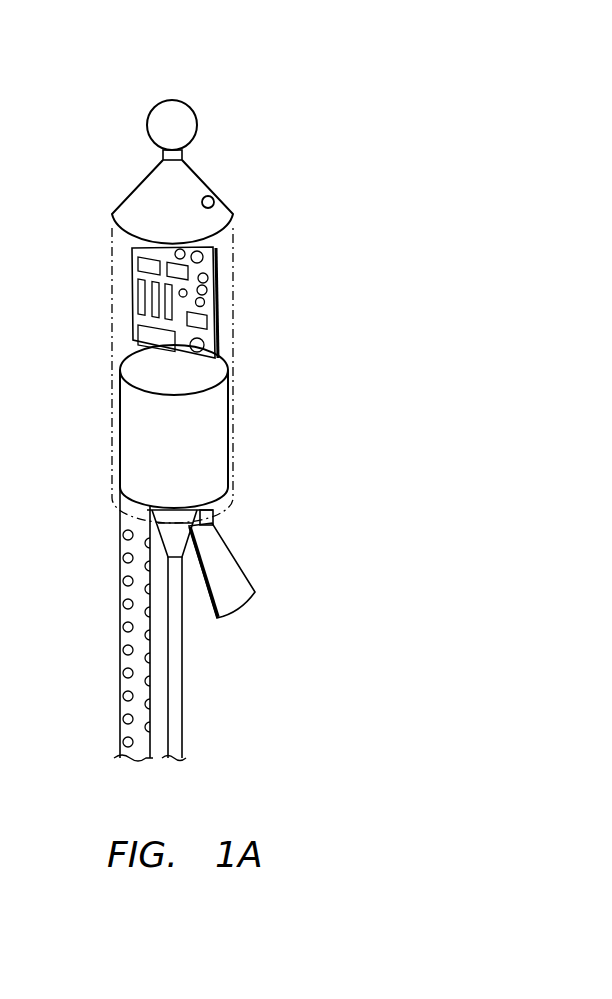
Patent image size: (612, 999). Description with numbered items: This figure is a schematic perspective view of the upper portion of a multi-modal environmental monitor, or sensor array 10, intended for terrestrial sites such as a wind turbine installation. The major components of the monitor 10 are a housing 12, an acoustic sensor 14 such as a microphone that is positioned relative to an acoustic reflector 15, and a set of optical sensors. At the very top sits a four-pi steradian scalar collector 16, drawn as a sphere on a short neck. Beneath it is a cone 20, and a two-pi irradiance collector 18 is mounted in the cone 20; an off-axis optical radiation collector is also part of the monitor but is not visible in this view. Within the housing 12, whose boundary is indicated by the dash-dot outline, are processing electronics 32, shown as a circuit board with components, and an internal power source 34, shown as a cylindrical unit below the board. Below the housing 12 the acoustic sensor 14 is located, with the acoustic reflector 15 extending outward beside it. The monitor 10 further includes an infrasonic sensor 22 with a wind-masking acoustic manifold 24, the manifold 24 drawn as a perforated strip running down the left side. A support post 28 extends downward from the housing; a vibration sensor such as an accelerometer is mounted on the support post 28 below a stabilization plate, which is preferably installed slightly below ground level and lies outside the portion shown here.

The monitor 10 is at (281, 67).
The housing 12 is at (257, 245).
The acoustic sensor 14 is at (224, 522).
The acoustic reflector 15 is at (238, 571).
The scalar collector 16 is at (186, 99).
The irradiance collector 18 is at (217, 193).
The cone 20 is at (203, 177).
The infrasonic sensor 22 is at (113, 521).
The wind-masking acoustic manifold 24 is at (119, 615).
The support post 28 is at (183, 684).
The processing electronics 32 is at (222, 298).
The internal power source 34 is at (230, 415).